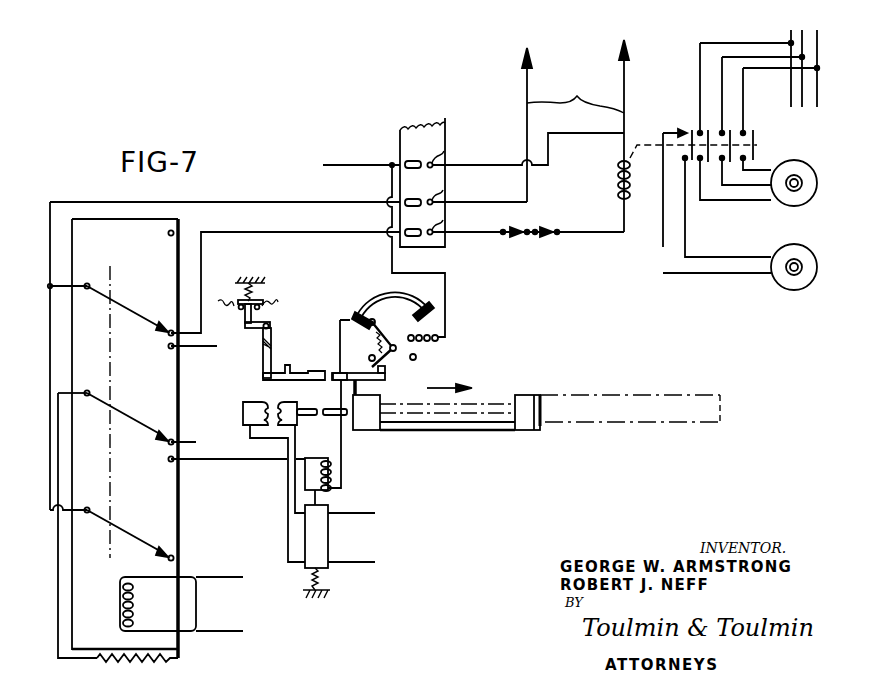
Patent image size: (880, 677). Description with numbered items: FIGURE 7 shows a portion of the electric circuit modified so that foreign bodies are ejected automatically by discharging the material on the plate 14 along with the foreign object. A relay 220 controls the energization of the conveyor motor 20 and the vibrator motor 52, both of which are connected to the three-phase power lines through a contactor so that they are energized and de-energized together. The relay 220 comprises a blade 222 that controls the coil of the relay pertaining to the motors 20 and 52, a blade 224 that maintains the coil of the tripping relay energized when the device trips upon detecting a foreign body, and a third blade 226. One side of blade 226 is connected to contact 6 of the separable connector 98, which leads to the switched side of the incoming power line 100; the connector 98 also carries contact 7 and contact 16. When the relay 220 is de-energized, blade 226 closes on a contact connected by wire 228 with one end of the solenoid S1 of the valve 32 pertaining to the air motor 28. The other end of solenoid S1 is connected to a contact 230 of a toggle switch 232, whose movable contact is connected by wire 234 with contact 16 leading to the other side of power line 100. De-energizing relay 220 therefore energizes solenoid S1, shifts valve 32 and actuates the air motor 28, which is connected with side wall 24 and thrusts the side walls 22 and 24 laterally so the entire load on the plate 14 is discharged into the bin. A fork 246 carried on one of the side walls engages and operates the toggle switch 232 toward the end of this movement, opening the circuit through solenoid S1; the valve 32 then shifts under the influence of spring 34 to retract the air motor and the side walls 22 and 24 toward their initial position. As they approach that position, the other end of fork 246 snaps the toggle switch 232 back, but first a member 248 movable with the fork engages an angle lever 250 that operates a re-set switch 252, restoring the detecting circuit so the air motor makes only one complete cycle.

The relay 220 is at (178, 640).
The blade 222 is at (155, 322).
The blade 224 is at (148, 414).
The third blade 226 is at (140, 537).
The wire 228 is at (226, 462).
The re-set switch 252 is at (264, 300).
The angle lever 250 is at (272, 325).
The member 248 is at (265, 368).
The fork 246 is at (311, 373).
The air motor 28 is at (245, 412).
The side wall 24 is at (361, 418).
The contact 230 is at (358, 316).
The toggle switch 232 is at (402, 303).
The wire 234 is at (450, 290).
The plate 14 is at (484, 430).
The side wall 22 is at (543, 418).
The solenoid S1 is at (322, 481).
The valve 32 is at (318, 554).
The spring 34 is at (320, 594).
The separable connector 98 is at (438, 243).
The contact 16 is at (440, 158).
The contact 6 is at (438, 199).
The contact 7 is at (438, 229).
The power line 100 is at (575, 127).
The motor 52 is at (790, 163).
The conveyor motor 20 is at (785, 258).